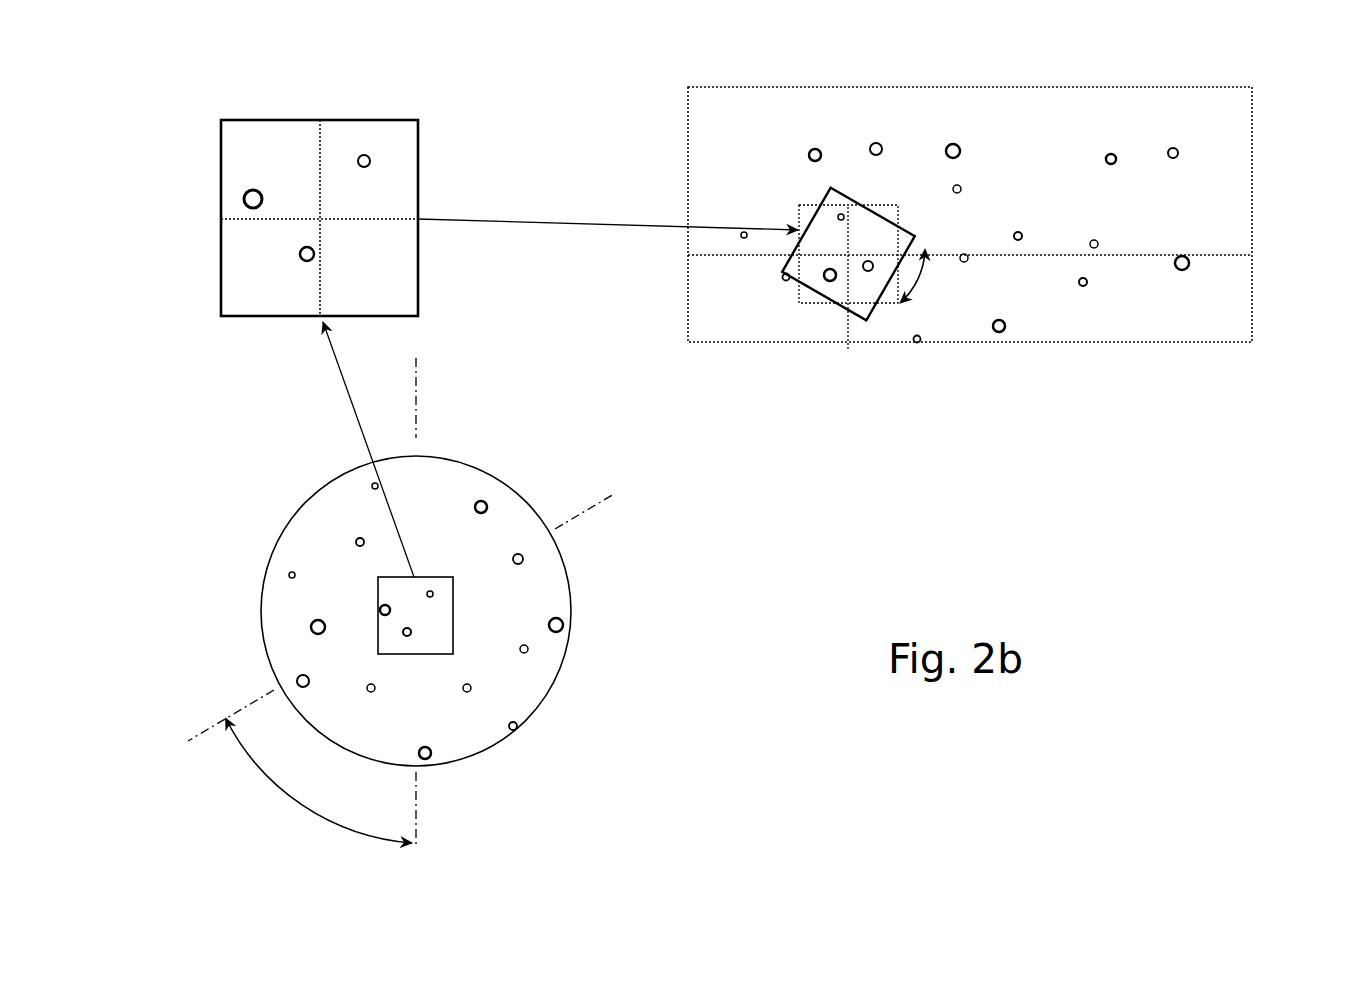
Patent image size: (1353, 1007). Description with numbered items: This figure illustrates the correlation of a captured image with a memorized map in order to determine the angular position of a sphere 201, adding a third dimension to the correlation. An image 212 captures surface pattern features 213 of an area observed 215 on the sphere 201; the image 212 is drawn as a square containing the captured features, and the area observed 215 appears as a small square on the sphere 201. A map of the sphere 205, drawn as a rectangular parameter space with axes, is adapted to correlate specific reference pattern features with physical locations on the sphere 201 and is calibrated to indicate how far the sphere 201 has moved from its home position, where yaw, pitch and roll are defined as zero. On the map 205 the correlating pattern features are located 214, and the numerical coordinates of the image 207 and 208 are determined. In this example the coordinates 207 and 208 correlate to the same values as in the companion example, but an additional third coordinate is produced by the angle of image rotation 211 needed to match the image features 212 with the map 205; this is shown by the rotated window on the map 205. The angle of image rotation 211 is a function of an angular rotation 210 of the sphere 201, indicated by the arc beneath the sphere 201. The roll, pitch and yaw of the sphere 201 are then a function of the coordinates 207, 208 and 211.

The sphere 201 is at (567, 655).
The map of the sphere 205 is at (1276, 214).
The numerical coordinate of the image 207 is at (630, 255).
The numerical coordinate of the image 208 is at (848, 392).
The angular rotation of the sphere 210 is at (310, 819).
The angle of image rotation 211 is at (928, 290).
The image 212 is at (320, 120).
The surface pattern features 213 is at (386, 166).
The located correlating pattern features 214 is at (873, 203).
The area observed 215 is at (454, 617).